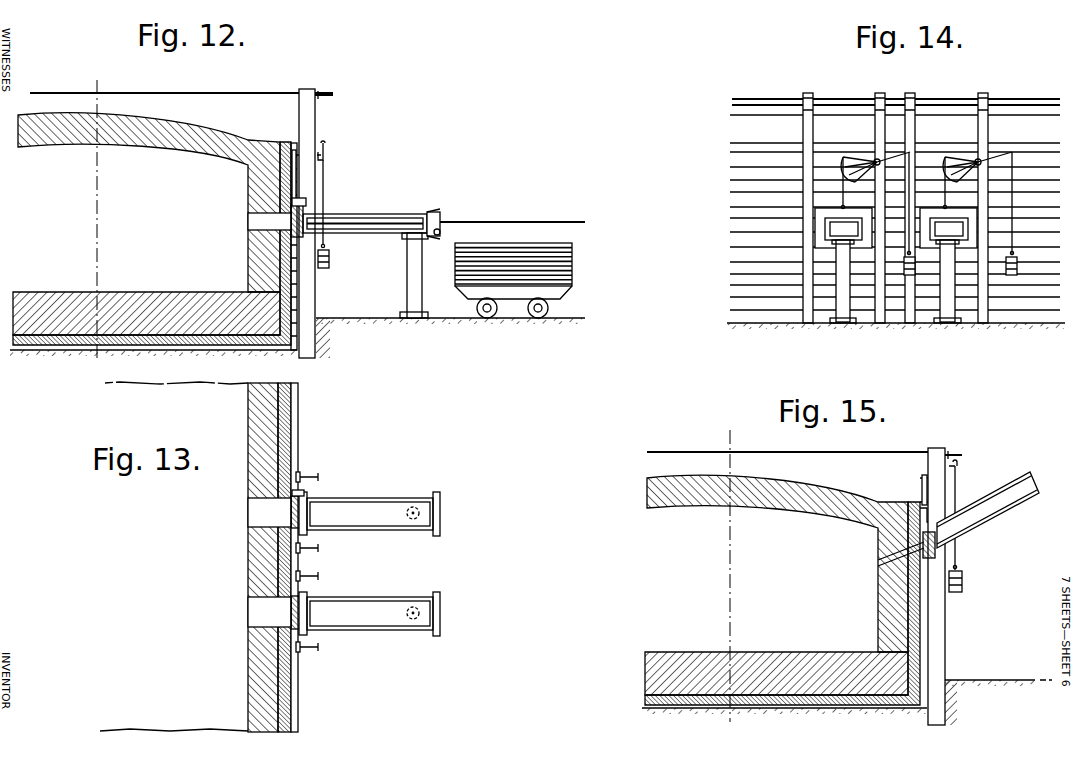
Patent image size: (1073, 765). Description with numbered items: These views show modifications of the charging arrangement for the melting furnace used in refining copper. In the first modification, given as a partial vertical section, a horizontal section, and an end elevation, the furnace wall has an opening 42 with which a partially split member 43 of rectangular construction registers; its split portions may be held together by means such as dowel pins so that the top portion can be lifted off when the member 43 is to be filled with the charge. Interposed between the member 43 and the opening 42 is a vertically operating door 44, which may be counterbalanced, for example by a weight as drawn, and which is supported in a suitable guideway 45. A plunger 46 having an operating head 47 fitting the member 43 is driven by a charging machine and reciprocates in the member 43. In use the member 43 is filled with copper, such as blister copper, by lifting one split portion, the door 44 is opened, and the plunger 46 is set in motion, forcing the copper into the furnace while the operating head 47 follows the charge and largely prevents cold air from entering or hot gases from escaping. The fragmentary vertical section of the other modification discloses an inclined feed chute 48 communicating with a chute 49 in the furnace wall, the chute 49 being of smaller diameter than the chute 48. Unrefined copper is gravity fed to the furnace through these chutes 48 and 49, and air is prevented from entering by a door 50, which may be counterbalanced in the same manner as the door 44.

In FIG. 12, the opening 42 is at (258, 223).
In FIG. 13, the opening 42 is at (258, 511).
In FIG. 12, the partially split member 43 is at (388, 213).
In FIG. 13, the partially split member 43 is at (390, 498).
In FIG. 14, the partially split member 43 is at (850, 220).
In FIG. 12, the vertically operating door 44 is at (305, 216).
In FIG. 13, the vertically operating door 44 is at (304, 514).
In FIG. 14, the vertically operating door 44 is at (830, 211).
In FIG. 12, the guideway 45 is at (302, 210).
In FIG. 13, the guideway 45 is at (306, 495).
In FIG. 14, the guideway 45 is at (818, 231).
In FIG. 12, the plunger 46 is at (508, 222).
In FIG. 12, the operating head 47 is at (432, 212).
In FIG. 15, the inclined feed chute 48 is at (987, 516).
In FIG. 15, the chute 49 is at (880, 566).
In FIG. 15, the door 50 is at (938, 550).